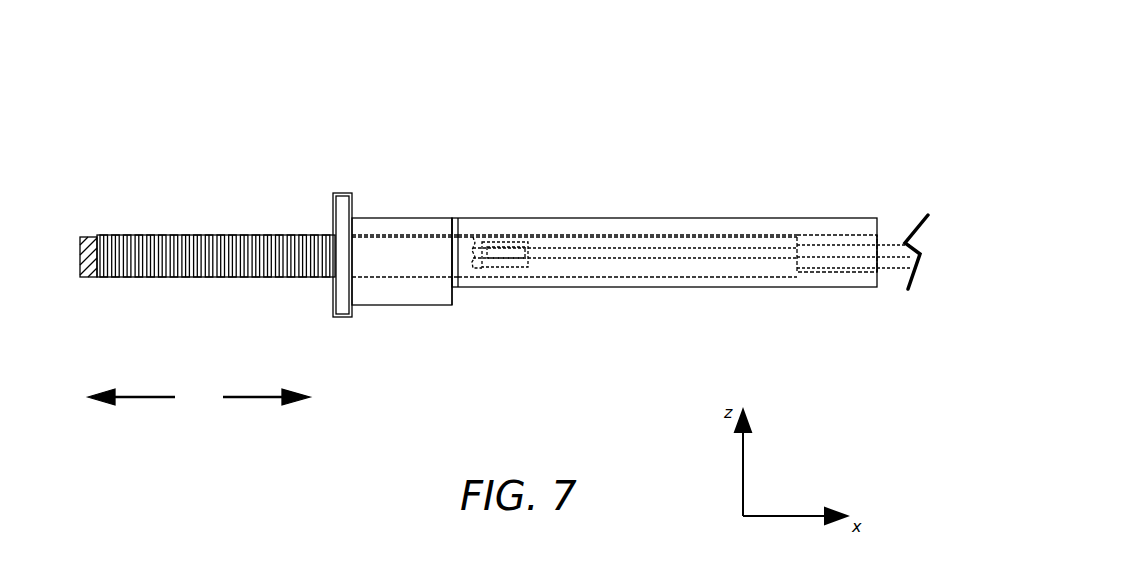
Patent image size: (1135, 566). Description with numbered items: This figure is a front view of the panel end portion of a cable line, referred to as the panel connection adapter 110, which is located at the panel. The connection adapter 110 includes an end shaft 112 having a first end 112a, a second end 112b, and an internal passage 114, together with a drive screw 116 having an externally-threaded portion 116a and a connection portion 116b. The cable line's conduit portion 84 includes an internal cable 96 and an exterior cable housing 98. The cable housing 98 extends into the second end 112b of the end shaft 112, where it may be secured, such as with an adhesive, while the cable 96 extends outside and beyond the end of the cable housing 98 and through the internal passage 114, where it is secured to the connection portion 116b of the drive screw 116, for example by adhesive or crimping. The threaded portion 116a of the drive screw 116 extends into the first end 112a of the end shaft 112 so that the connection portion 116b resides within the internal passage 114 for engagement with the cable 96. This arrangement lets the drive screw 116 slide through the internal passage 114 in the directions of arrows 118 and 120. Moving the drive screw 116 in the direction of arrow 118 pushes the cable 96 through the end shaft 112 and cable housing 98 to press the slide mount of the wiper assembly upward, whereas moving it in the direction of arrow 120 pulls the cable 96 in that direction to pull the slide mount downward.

The panel connection adapter 110 is at (228, 90).
The drive screw 116 is at (318, 193).
The externally-threaded portion 116a is at (195, 235).
The connection portion 116b is at (500, 241).
The end shaft 112 is at (612, 261).
The first end 112a is at (380, 293).
The second end 112b is at (838, 276).
The internal passage 114 is at (702, 226).
The cable 96 is at (612, 253).
The cable housing 98 is at (890, 233).
The conduit portion 84 is at (890, 205).
The arrow 118 is at (250, 399).
The arrow 120 is at (148, 399).